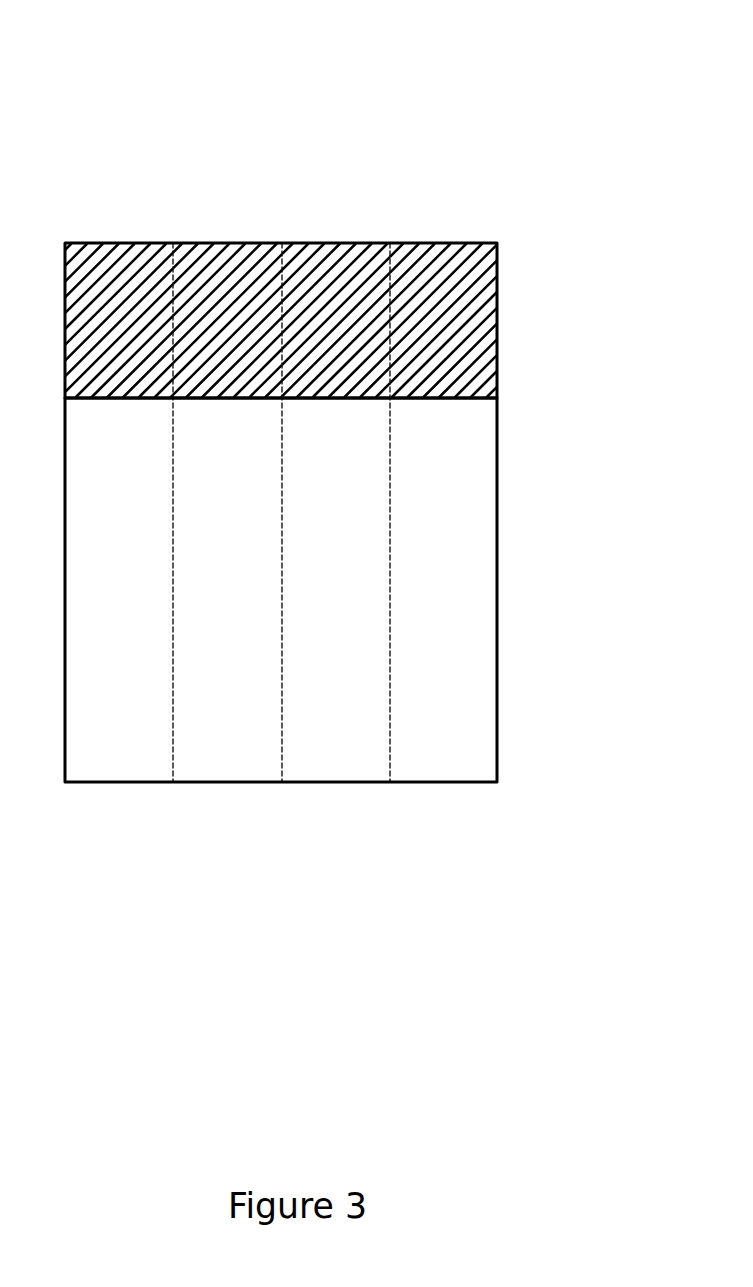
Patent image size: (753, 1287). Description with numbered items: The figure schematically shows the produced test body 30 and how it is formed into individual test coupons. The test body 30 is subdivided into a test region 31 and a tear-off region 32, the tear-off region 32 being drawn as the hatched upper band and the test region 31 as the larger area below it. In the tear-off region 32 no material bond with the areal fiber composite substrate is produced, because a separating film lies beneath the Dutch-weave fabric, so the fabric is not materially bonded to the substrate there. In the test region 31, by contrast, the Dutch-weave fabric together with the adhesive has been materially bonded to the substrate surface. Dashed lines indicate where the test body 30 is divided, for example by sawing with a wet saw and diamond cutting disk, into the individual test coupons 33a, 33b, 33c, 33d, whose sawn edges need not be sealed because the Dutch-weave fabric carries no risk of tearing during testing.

The test body 30 is at (359, 393).
The test region 31 is at (517, 542).
The tear-off region 32 is at (356, 437).
The test coupon 33a is at (123, 230).
The test coupon 33b is at (237, 230).
The test coupon 33c is at (348, 228).
The test coupon 33d is at (458, 228).